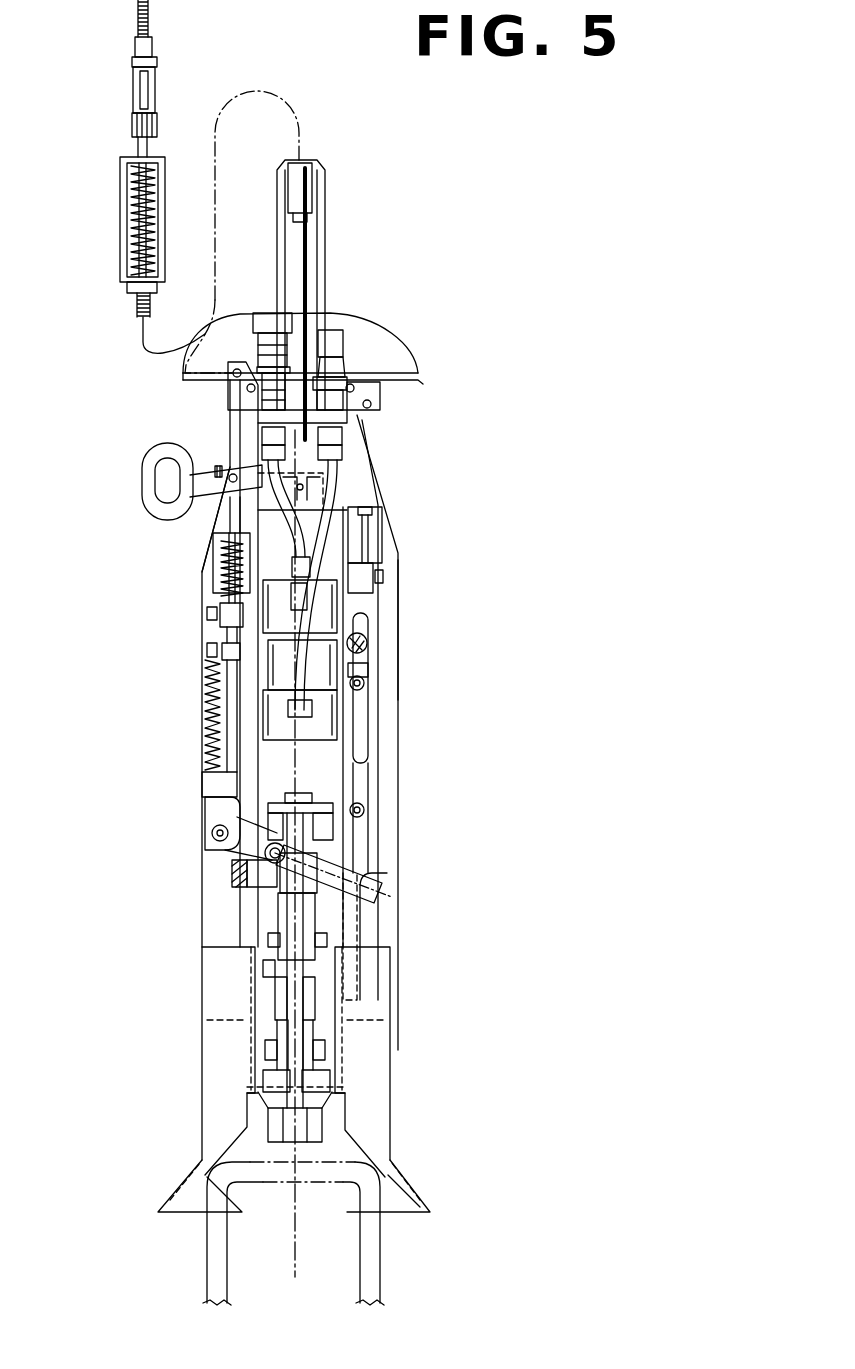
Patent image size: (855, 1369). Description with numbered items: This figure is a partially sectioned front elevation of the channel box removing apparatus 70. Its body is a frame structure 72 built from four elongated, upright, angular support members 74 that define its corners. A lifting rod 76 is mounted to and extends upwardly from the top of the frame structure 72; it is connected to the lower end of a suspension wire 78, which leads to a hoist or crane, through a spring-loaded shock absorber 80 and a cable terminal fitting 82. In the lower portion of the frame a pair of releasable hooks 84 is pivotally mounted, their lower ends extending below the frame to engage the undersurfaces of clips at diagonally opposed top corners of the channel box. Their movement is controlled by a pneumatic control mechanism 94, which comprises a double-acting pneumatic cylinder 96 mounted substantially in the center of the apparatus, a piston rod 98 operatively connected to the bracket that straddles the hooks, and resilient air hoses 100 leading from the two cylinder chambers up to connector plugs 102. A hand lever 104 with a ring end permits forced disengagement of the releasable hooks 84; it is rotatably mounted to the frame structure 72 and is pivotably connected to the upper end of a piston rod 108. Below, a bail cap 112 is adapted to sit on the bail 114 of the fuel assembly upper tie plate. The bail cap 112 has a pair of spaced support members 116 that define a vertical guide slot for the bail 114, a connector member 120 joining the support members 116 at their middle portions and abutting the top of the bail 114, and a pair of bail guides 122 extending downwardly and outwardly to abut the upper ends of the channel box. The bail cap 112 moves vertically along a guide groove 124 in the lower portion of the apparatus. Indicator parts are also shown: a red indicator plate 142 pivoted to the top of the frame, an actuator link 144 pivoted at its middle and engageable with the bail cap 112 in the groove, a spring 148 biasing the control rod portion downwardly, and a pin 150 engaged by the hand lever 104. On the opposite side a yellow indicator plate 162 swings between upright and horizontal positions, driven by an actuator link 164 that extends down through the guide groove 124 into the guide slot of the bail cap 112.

The channel box removing apparatus 70 is at (405, 539).
The frame structure 72 is at (405, 706).
The angular support members 74 is at (387, 593).
The lifting rod 76 is at (317, 222).
The suspension wire 78 is at (140, 12).
The spring-loaded shock absorber 80 is at (118, 228).
The cable terminal fitting 82 is at (130, 97).
The releasable hooks 84 is at (313, 1127).
The pneumatic control mechanism 94 is at (365, 627).
The double-acting pneumatic cylinder 96 is at (337, 670).
The piston rod 98 is at (252, 545).
The resilient air hoses 100 is at (310, 528).
The connector plugs 102 is at (333, 330).
The hand lever 104 is at (143, 482).
The piston rod 108 is at (300, 825).
The bail cap 112 is at (495, 1089).
The bail 114 is at (380, 1242).
The support members 116 is at (367, 1053).
The connector member 120 is at (317, 1018).
The bail guides 122 is at (412, 1180).
The guide groove 124 is at (373, 936).
The red indicator plate 142 is at (187, 377).
The actuator link 144 is at (387, 897).
The spring 148 is at (225, 583).
The pin 150 is at (227, 468).
The yellow indicator plate 162 is at (413, 381).
The actuator link 164 is at (362, 773).